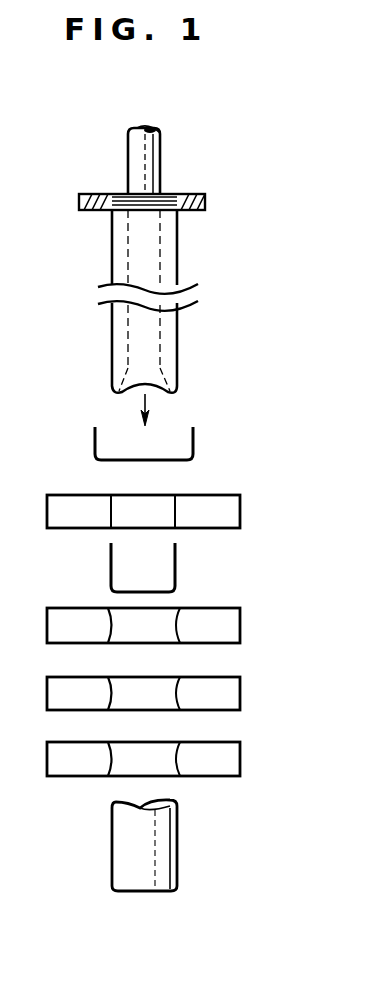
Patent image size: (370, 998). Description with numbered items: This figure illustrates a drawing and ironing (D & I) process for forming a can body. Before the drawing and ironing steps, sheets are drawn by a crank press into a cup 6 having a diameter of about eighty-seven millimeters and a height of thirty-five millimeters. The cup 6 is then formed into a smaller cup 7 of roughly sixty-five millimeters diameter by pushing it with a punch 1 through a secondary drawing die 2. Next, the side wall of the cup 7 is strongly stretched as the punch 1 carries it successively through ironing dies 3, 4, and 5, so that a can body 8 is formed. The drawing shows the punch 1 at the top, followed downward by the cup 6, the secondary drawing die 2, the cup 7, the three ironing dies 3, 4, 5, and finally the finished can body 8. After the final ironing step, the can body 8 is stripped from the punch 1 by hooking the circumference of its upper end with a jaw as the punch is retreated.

The punch 1 is at (177, 256).
The secondary drawing die 2 is at (236, 528).
The ironing die 3 is at (236, 608).
The ironing die 4 is at (236, 677).
The ironing die 5 is at (236, 742).
The cup 6 is at (193, 450).
The cup 7 is at (176, 580).
The can body 8 is at (177, 850).